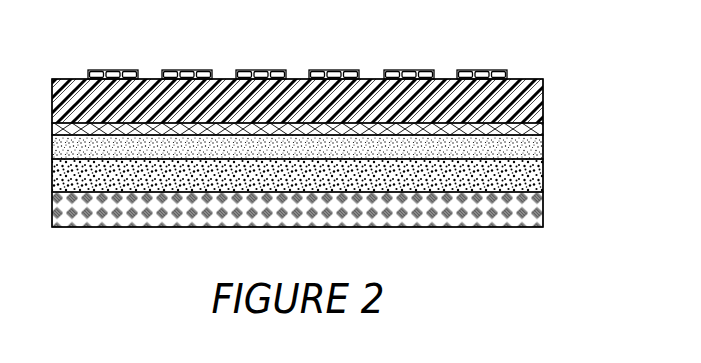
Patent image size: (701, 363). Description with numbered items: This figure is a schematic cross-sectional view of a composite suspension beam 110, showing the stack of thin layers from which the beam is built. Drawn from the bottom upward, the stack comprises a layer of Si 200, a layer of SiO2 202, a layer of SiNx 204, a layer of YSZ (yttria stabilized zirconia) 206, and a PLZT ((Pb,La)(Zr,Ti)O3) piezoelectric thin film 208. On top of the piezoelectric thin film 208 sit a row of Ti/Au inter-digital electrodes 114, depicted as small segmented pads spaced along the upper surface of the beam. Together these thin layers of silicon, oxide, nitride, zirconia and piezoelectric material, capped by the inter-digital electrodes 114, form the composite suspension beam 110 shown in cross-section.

The composite suspension beam 110 is at (554, 51).
The Ti/Au inter-digital electrodes 114 is at (387, 69).
The Si layer 200 is at (544, 208).
The SiO2 layer 202 is at (544, 179).
The SiNx layer 204 is at (544, 151).
The YSZ layer 206 is at (544, 129).
The PLZT piezoelectric thin film 208 is at (544, 105).